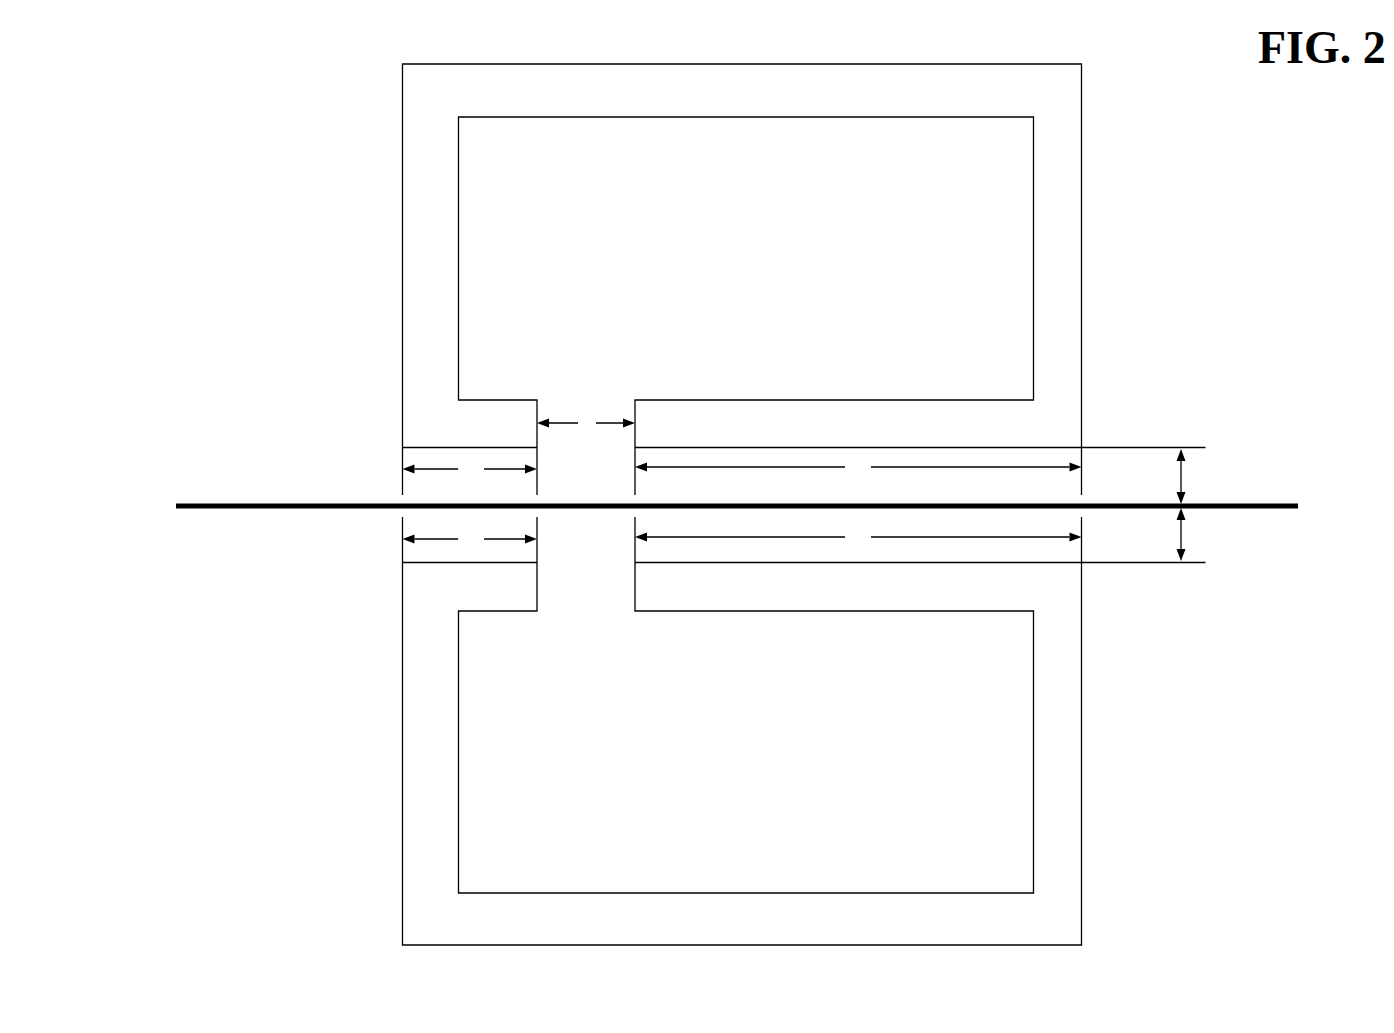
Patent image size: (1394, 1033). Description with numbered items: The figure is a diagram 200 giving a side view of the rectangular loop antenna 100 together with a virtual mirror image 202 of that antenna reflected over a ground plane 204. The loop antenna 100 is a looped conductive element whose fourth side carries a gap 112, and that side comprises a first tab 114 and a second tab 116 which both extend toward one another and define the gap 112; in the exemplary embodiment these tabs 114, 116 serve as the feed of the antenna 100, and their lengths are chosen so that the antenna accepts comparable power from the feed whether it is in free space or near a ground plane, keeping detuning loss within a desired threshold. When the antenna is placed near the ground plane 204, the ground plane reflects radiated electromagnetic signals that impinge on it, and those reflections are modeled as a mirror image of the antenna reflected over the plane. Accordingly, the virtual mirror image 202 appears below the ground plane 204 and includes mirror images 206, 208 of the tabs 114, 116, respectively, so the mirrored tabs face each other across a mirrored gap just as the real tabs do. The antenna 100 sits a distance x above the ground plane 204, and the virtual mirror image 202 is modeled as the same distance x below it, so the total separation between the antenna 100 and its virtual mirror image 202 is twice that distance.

The loop antenna 100 is at (1082, 100).
The gap 112 is at (591, 373).
The first tab 114 is at (468, 399).
The second tab 116 is at (758, 398).
The diagram 200 is at (166, 68).
The virtual mirror image 202 is at (1082, 727).
The ground plane 204 is at (270, 510).
The mirror image of first tab 206 is at (505, 612).
The mirror image of second tab 208 is at (712, 612).